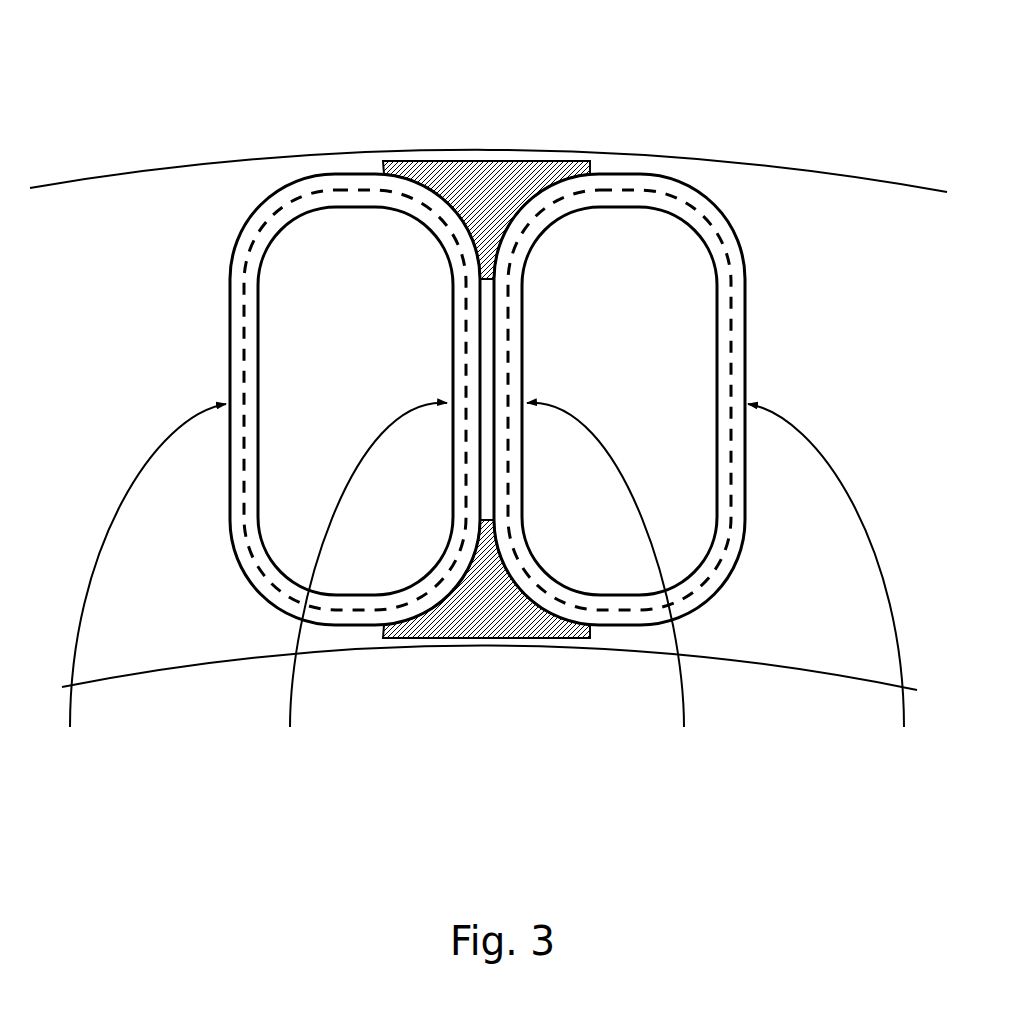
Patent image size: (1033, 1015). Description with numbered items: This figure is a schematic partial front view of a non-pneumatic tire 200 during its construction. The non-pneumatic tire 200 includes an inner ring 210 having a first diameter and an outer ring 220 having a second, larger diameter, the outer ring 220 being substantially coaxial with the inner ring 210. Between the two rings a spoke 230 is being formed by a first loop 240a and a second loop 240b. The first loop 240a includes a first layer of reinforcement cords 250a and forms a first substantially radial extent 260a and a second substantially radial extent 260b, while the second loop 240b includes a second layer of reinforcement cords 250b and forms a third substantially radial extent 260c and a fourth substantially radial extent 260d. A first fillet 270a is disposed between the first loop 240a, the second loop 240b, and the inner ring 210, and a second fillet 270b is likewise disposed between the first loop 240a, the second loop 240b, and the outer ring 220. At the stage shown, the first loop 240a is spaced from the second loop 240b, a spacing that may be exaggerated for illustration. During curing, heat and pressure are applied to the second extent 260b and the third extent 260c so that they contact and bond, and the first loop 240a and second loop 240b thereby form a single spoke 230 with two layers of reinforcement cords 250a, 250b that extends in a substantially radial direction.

The non-pneumatic tire 200 is at (693, 122).
The inner ring 210 is at (782, 678).
The outer ring 220 is at (858, 170).
The spoke 230 is at (503, 142).
The first loop 240a is at (332, 172).
The second loop 240b is at (618, 172).
The first layer of reinforcement cords 250a is at (290, 197).
The second layer of reinforcement cords 250b is at (700, 197).
The first substantially radial extent 260a is at (129, 589).
The second substantially radial extent 260b is at (352, 589).
The third substantially radial extent 260c is at (615, 589).
The fourth substantially radial extent 260d is at (840, 589).
The first fillet 270a is at (481, 640).
The second fillet 270b is at (453, 158).